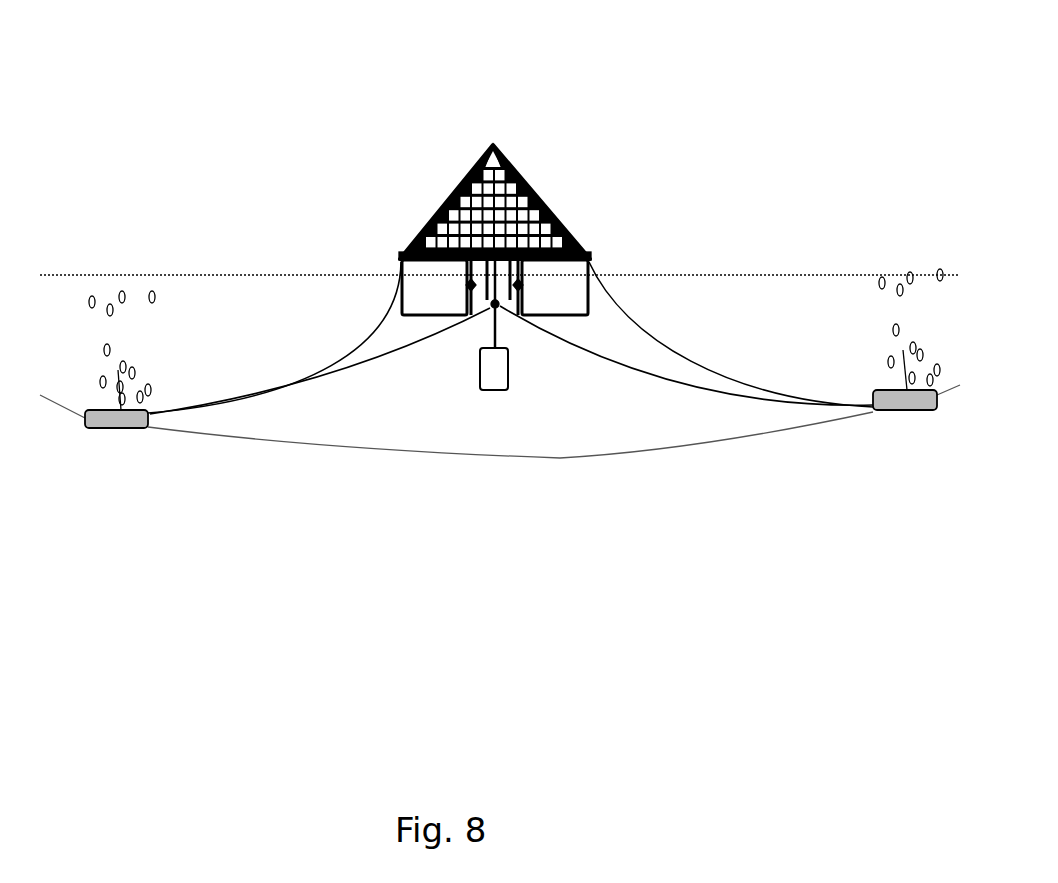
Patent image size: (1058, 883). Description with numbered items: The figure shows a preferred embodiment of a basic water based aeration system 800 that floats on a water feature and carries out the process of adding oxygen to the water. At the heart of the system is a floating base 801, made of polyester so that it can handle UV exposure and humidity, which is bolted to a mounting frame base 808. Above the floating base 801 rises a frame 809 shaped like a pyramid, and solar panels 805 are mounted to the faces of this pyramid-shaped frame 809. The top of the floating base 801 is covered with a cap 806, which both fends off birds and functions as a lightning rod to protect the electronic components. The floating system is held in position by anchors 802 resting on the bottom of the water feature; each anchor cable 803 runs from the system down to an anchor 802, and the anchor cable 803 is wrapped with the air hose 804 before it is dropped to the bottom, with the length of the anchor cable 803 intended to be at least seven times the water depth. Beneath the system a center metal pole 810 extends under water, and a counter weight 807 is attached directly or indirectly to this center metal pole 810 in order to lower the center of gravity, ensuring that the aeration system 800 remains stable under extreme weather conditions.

The water based aeration system 800 is at (489, 234).
The floating base 801 is at (593, 265).
The anchors 802 is at (117, 430).
The anchor cable 803 is at (677, 357).
The air hose 804 is at (630, 380).
The solar panels 805 is at (437, 210).
The cap 806 is at (505, 153).
The counter weight 807 is at (508, 388).
The mounting frame base 808 is at (583, 247).
The frame 809 is at (407, 240).
The center metal pole 810 is at (455, 330).